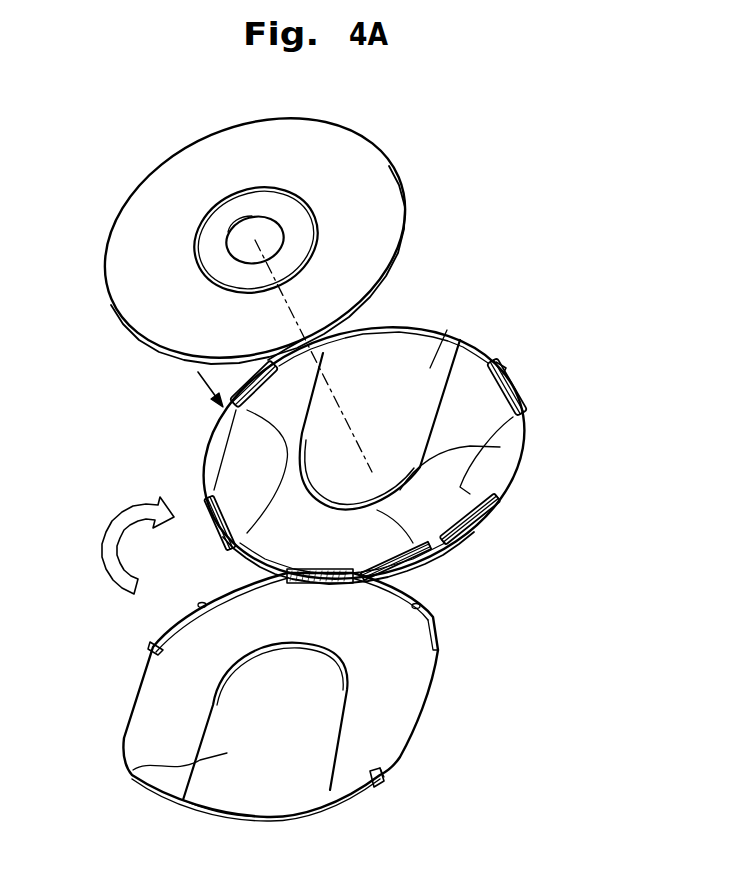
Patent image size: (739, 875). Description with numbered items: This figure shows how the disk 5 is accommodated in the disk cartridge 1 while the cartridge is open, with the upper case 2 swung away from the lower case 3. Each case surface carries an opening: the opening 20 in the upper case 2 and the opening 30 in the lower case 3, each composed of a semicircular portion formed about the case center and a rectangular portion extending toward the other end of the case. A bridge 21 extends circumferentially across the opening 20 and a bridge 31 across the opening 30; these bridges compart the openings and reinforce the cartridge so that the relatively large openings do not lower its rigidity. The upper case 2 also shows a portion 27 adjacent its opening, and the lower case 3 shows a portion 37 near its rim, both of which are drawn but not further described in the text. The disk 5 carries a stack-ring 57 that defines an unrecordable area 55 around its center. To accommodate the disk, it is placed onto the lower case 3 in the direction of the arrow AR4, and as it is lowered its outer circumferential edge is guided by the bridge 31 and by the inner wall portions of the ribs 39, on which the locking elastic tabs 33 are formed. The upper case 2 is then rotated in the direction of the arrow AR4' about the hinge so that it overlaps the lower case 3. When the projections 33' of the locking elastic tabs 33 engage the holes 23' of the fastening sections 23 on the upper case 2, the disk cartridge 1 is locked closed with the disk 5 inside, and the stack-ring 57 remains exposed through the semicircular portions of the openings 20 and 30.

The disk cartridge 1 is at (606, 240).
The upper case 2 is at (432, 688).
The lower case 3 is at (495, 363).
The disk 5 is at (401, 182).
The opening 20 is at (132, 776).
The bridge 21 is at (288, 815).
The fastening section 23 is at (430, 795).
The hole 23' is at (442, 770).
The disk receiving portion 27 is at (214, 682).
The opening 30 is at (460, 336).
The bridge 31 is at (433, 330).
The locking elastic tab 33 is at (562, 387).
The projection 33' is at (568, 349).
The hinge portion 37 is at (427, 553).
The rib 39 is at (260, 497).
The unrecordable area 55 is at (218, 230).
The stack-ring 57 is at (277, 190).
The arrow AR4 is at (174, 411).
The arrow AR4' is at (104, 567).